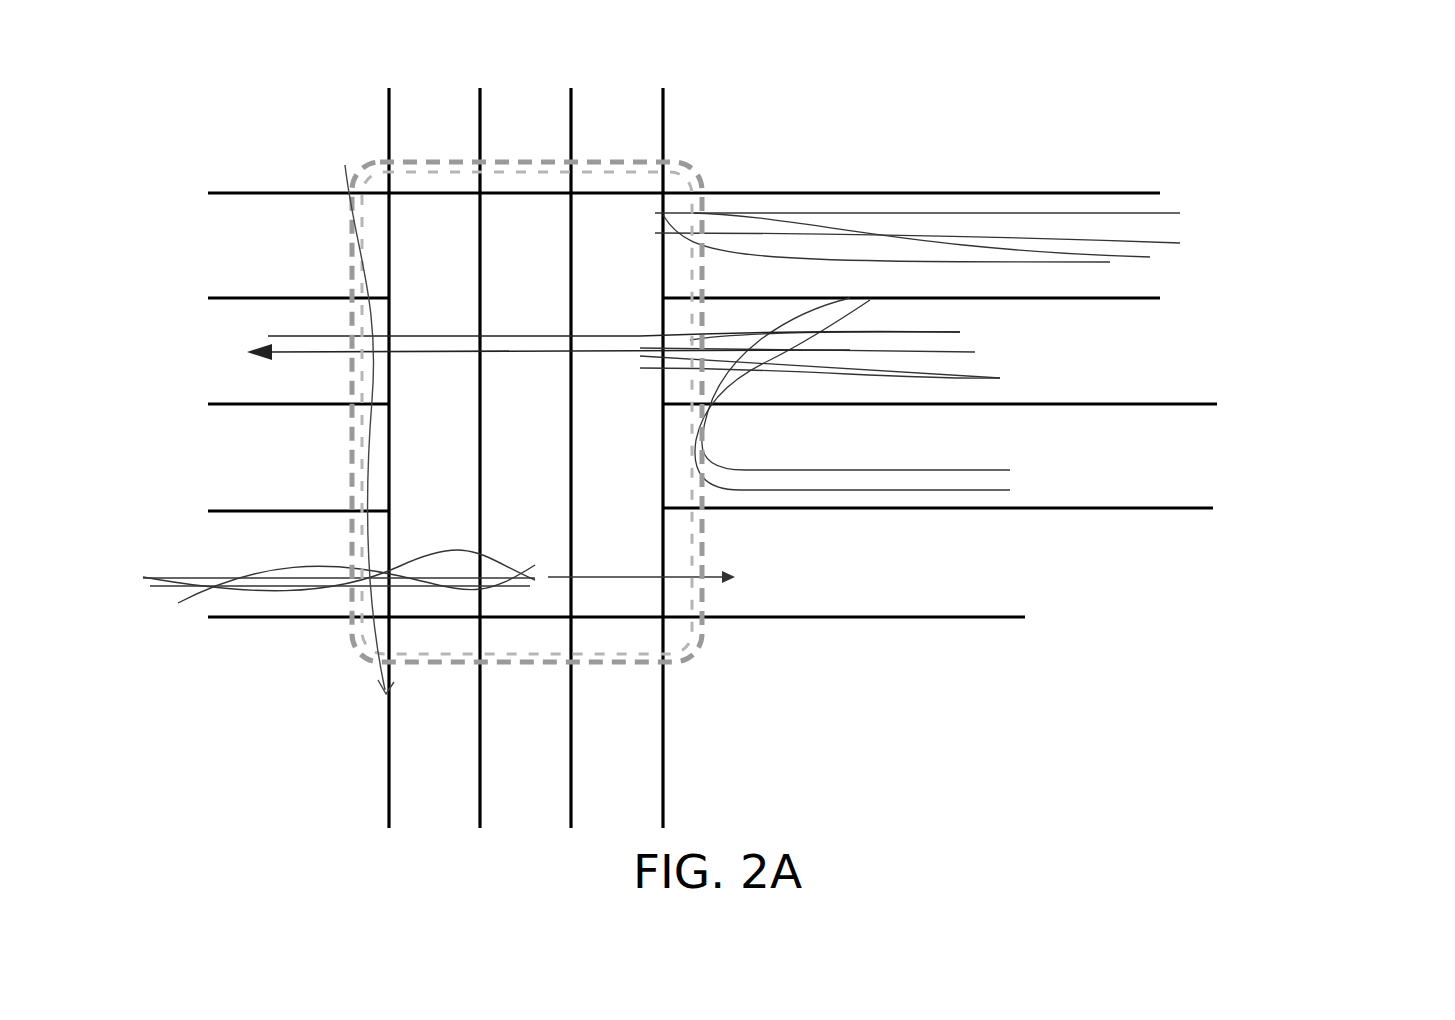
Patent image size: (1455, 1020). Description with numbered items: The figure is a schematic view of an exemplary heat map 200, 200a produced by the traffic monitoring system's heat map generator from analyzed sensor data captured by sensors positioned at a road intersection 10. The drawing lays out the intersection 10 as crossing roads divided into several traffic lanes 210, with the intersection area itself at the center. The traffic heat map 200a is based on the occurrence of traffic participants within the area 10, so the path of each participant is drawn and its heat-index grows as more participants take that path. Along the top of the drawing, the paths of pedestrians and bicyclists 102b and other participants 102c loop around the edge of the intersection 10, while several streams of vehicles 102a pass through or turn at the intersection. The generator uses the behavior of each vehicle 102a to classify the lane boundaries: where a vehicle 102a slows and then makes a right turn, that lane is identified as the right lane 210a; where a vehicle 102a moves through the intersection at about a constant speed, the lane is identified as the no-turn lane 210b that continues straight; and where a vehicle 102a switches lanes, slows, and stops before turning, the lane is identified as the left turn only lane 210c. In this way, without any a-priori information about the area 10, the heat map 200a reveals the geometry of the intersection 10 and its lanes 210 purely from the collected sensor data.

The heat map 200 is at (707, 330).
The traffic heat map 200a is at (712, 405).
The road intersection 10 is at (544, 301).
The traffic lane 210 is at (480, 85).
The right lane 210a is at (1305, 257).
The no-turn lane 210b is at (1300, 298).
The left turn only lane 210c is at (1220, 404).
The vehicle 102a is at (860, 266).
The pedestrians and bicyclists 102b is at (731, 377).
The traffic participant 102c is at (648, 157).